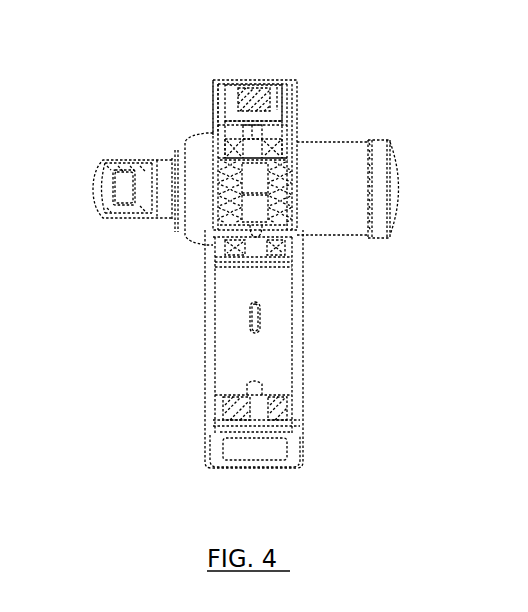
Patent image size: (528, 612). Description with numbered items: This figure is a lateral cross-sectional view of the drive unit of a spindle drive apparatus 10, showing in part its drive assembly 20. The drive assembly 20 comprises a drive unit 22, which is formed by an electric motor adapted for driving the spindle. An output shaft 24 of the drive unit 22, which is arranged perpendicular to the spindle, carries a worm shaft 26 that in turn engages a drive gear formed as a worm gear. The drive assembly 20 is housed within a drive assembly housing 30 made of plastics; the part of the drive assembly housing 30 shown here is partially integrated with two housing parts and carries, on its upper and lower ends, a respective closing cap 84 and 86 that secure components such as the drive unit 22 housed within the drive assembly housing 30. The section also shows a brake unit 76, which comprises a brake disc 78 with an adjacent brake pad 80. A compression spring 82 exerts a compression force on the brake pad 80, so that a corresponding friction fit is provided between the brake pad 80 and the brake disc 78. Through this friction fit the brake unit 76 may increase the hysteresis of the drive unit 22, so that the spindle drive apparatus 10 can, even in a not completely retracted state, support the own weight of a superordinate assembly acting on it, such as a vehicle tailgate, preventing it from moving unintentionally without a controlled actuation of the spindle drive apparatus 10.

The spindle drive apparatus 10 is at (441, 117).
The drive assembly 20 is at (317, 99).
The drive unit 22 is at (287, 357).
The output shaft 24 is at (258, 147).
The worm shaft 26 is at (272, 207).
The drive assembly housing 30 is at (300, 407).
The brake unit 76 is at (213, 72).
The brake disc 78 is at (227, 127).
The brake pad 80 is at (235, 110).
The compression spring 82 is at (246, 80).
The closing cap 84 is at (290, 454).
The closing cap 86 is at (288, 78).